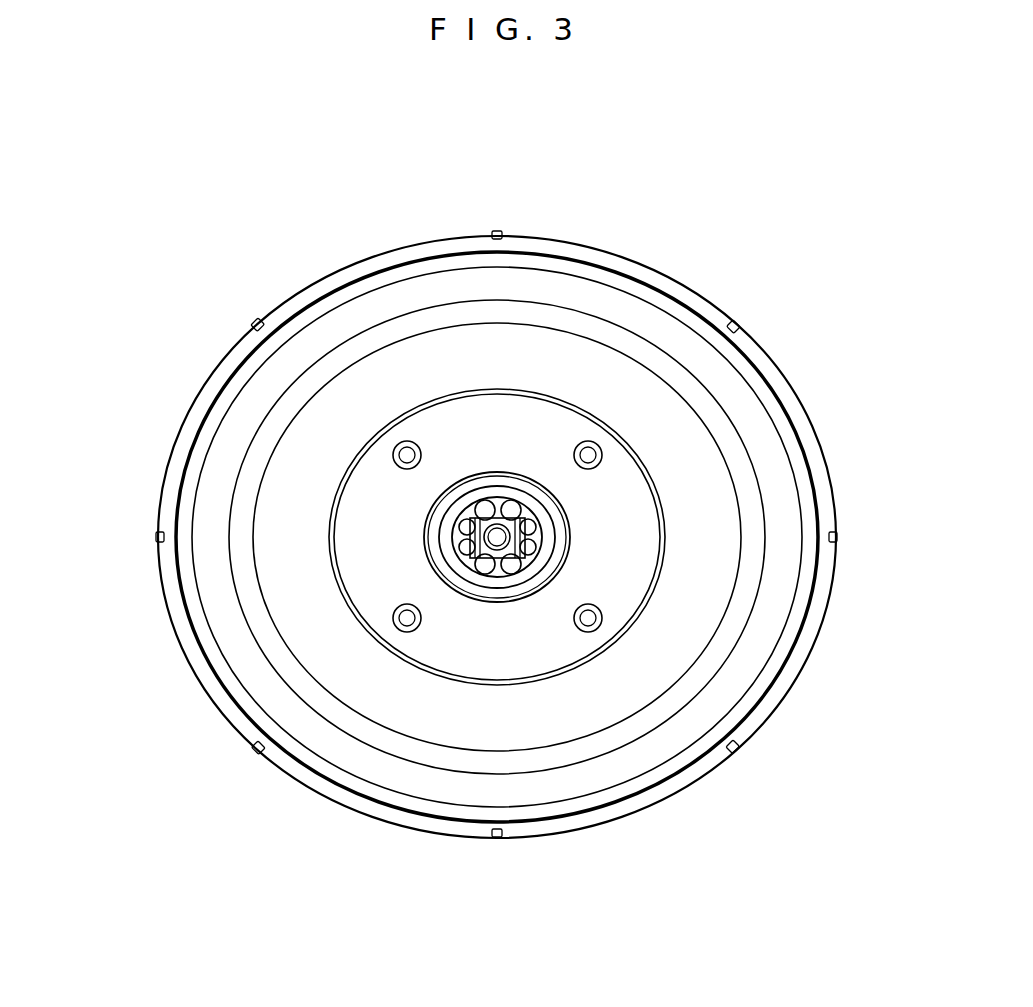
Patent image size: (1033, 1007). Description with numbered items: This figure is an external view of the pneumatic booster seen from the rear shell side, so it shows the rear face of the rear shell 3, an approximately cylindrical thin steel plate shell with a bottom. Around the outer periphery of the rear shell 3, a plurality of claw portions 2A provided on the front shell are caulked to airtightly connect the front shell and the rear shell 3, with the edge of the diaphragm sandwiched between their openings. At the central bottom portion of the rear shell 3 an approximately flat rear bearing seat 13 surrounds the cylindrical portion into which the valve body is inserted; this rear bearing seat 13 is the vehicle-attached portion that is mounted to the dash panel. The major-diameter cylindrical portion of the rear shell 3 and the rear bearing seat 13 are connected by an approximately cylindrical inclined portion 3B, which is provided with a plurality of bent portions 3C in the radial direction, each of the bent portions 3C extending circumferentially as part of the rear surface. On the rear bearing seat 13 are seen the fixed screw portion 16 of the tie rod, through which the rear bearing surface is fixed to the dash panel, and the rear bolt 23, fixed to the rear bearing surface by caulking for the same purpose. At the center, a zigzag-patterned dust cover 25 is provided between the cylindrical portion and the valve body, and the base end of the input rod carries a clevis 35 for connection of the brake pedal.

The rear shell 3 is at (648, 753).
The inclined portion 3B is at (247, 497).
The bent portions 3C is at (280, 765).
The claw portions 2A is at (497, 231).
The rear bearing seat 13 is at (513, 423).
The fixed screw portion 16 is at (587, 453).
The rear bolt 23 is at (407, 455).
The clevis 35 is at (527, 533).
The dust cover 25 is at (500, 568).